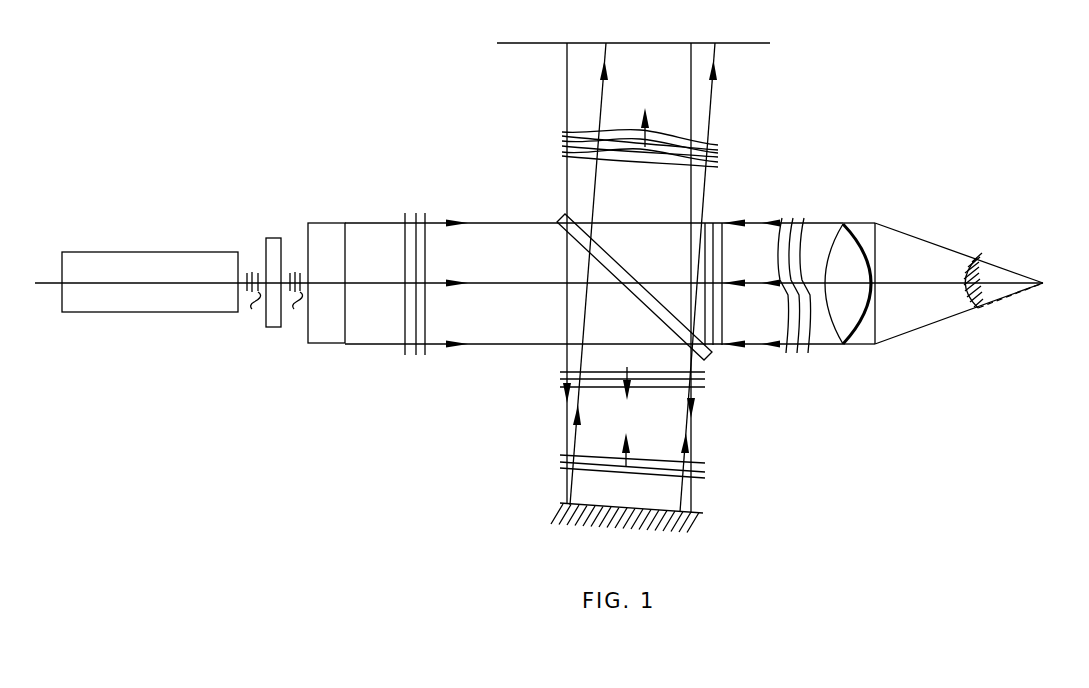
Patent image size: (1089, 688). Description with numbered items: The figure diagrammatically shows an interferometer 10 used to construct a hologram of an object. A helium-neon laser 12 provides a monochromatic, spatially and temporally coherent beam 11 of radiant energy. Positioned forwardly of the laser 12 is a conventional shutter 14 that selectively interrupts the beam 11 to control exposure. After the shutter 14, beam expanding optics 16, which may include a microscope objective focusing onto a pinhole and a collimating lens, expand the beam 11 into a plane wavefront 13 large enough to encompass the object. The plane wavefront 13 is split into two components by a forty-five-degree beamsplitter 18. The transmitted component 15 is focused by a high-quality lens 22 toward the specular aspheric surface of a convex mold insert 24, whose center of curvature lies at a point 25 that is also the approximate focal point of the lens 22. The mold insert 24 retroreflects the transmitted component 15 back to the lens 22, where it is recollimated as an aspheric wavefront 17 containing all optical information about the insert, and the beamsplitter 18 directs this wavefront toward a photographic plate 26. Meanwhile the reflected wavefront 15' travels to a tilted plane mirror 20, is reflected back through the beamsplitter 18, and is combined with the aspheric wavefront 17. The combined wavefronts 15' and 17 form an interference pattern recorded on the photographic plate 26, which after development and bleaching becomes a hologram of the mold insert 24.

The interferometer 10 is at (852, 128).
The beam 11 is at (278, 301).
The helium-neon laser 12 is at (178, 252).
The plane wavefront 13 is at (425, 249).
The shutter 14 is at (273, 238).
The transmitted component 15 is at (742, 284).
The reflected wavefront 15' is at (632, 321).
The beam expanding optics 16 is at (332, 223).
The aspheric wavefront 17 is at (816, 248).
The beamsplitter 18 is at (613, 259).
The tilted plane mirror 20 is at (595, 505).
The lens 22 is at (857, 223).
The mold insert 24 is at (965, 271).
The point 25 is at (1046, 283).
The photographic plate 26 is at (742, 43).